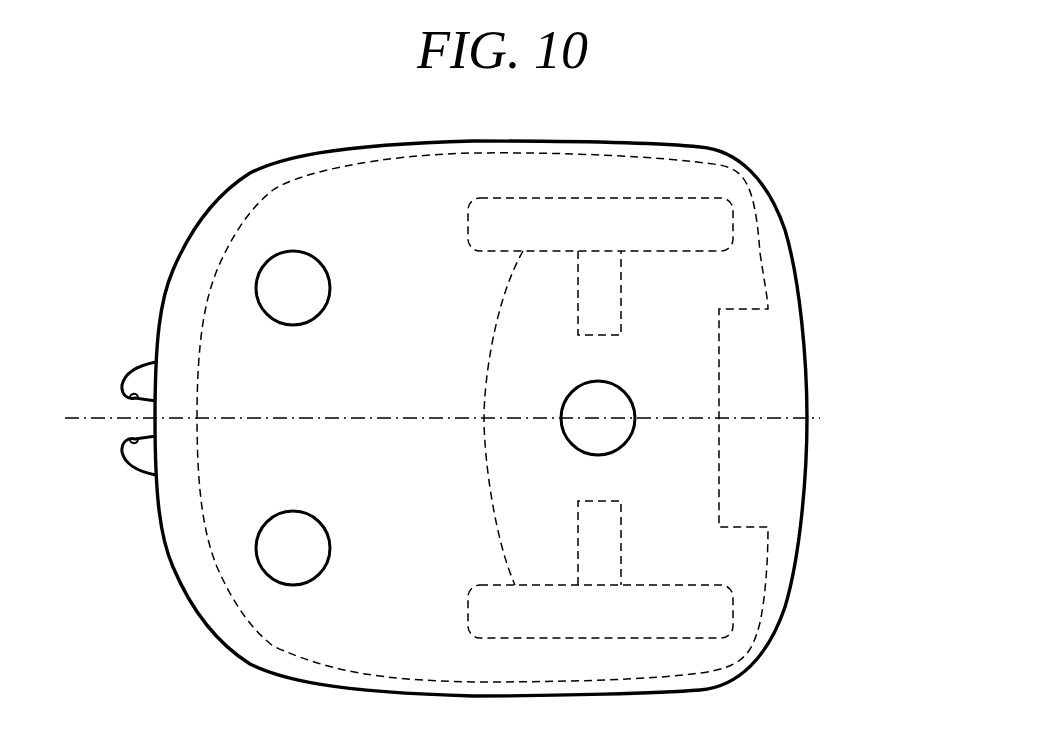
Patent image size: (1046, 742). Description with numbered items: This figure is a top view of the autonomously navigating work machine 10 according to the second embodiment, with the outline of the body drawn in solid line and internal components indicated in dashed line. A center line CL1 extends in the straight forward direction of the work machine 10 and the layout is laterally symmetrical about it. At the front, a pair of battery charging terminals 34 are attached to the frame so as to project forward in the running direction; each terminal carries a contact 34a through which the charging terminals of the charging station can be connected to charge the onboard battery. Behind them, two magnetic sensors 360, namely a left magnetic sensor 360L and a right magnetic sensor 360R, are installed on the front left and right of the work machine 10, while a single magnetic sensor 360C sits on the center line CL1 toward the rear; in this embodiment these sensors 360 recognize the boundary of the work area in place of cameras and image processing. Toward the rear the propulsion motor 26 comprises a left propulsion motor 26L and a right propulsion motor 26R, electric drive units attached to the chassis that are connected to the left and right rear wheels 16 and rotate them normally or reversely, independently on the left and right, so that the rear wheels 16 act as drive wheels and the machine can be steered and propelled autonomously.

The work machine 10 is at (733, 138).
The rear wheels 16 is at (500, 418).
The propulsion motor 26 is at (696, 418).
The right propulsion motor 26R is at (621, 280).
The left propulsion motor 26L is at (621, 525).
The battery charging terminals 34 is at (124, 382).
The contacts 34a is at (130, 440).
The magnetic sensors 360 is at (271, 418).
The right magnetic sensor 360R is at (293, 325).
The left magnetic sensor 360L is at (293, 510).
The rear magnetic sensor 360C is at (634, 400).
The center line CL1 is at (468, 418).